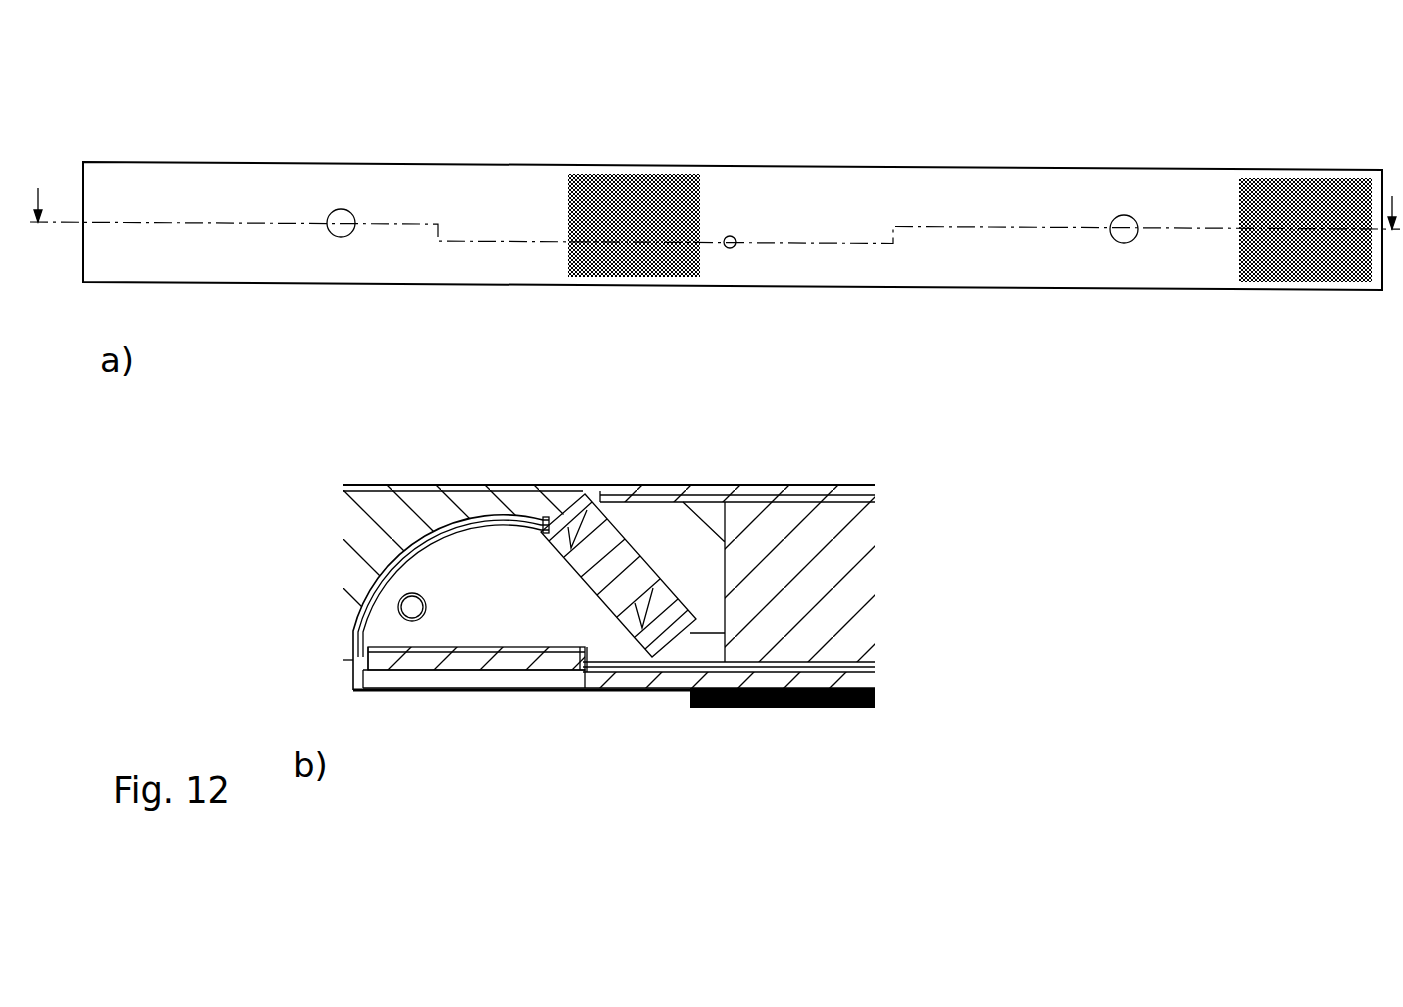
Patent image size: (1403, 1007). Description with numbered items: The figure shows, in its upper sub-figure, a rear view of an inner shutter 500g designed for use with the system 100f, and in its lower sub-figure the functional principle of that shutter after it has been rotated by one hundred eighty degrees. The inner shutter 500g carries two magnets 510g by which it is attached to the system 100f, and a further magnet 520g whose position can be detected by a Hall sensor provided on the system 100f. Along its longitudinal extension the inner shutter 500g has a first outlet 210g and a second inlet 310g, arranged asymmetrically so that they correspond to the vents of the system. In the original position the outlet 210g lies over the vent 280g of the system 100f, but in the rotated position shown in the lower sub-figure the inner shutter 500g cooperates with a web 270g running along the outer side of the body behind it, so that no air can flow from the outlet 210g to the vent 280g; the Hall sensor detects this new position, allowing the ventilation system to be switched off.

The inner shutter 500g is at (1078, 156).
The magnets 510g is at (1122, 227).
The magnet 520g is at (733, 247).
The first outlet 210g is at (607, 270).
The second inlet 310g is at (1275, 268).
The system 100f is at (963, 545).
The vent 280g is at (511, 678).
The web 270g is at (585, 674).